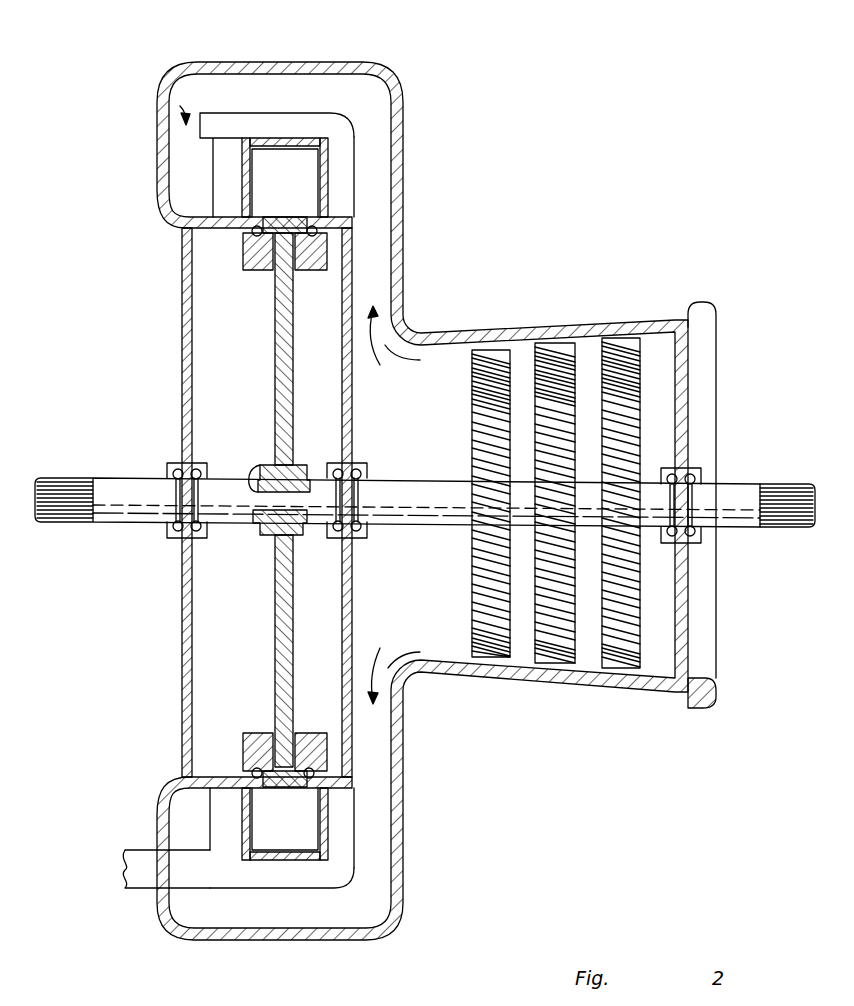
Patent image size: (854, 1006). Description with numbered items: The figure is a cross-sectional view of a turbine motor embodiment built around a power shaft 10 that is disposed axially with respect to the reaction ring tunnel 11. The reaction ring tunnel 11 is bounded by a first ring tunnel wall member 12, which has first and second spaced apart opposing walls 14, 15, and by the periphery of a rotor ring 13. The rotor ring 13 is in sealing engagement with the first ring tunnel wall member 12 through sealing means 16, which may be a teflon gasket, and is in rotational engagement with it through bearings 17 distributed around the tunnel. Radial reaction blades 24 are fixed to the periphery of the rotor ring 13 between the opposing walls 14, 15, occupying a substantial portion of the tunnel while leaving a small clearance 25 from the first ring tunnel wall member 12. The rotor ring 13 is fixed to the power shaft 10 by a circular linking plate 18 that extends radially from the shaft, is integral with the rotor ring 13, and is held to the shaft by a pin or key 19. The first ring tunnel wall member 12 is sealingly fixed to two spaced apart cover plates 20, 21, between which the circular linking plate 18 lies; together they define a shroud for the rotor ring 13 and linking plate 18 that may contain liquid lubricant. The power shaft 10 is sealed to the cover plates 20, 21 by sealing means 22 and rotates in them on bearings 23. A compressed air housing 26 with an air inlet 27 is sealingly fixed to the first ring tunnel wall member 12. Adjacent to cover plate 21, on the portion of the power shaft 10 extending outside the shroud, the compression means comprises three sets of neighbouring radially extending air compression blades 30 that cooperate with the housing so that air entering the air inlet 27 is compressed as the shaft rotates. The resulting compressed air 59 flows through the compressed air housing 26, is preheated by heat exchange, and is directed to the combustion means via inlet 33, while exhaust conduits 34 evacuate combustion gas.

The power shaft 10 is at (113, 518).
The reaction ring tunnel 11 is at (361, 210).
The first ring tunnel wall member 12 is at (333, 183).
The rotor ring 13 is at (250, 234).
The first opposing wall 14 is at (328, 182).
The second opposing wall 15 is at (240, 160).
The sealing means 16 is at (247, 226).
The bearings 17 is at (320, 240).
The circular linking plate 18 is at (275, 350).
The pin or key 19 is at (256, 488).
The cover plate 20 is at (183, 630).
The cover plate 21 is at (353, 422).
The sealing means 22 is at (172, 468).
The bearings 23 is at (178, 531).
The radial reaction blades 24 is at (268, 178).
The clearance 25 is at (278, 143).
The compressed air housing 26 is at (186, 102).
The air inlet 27 is at (705, 405).
The air compression blades 30 is at (607, 670).
The inlet 33 is at (235, 110).
The exhaust conduits 34 is at (155, 887).
The compressed air 59 is at (180, 106).